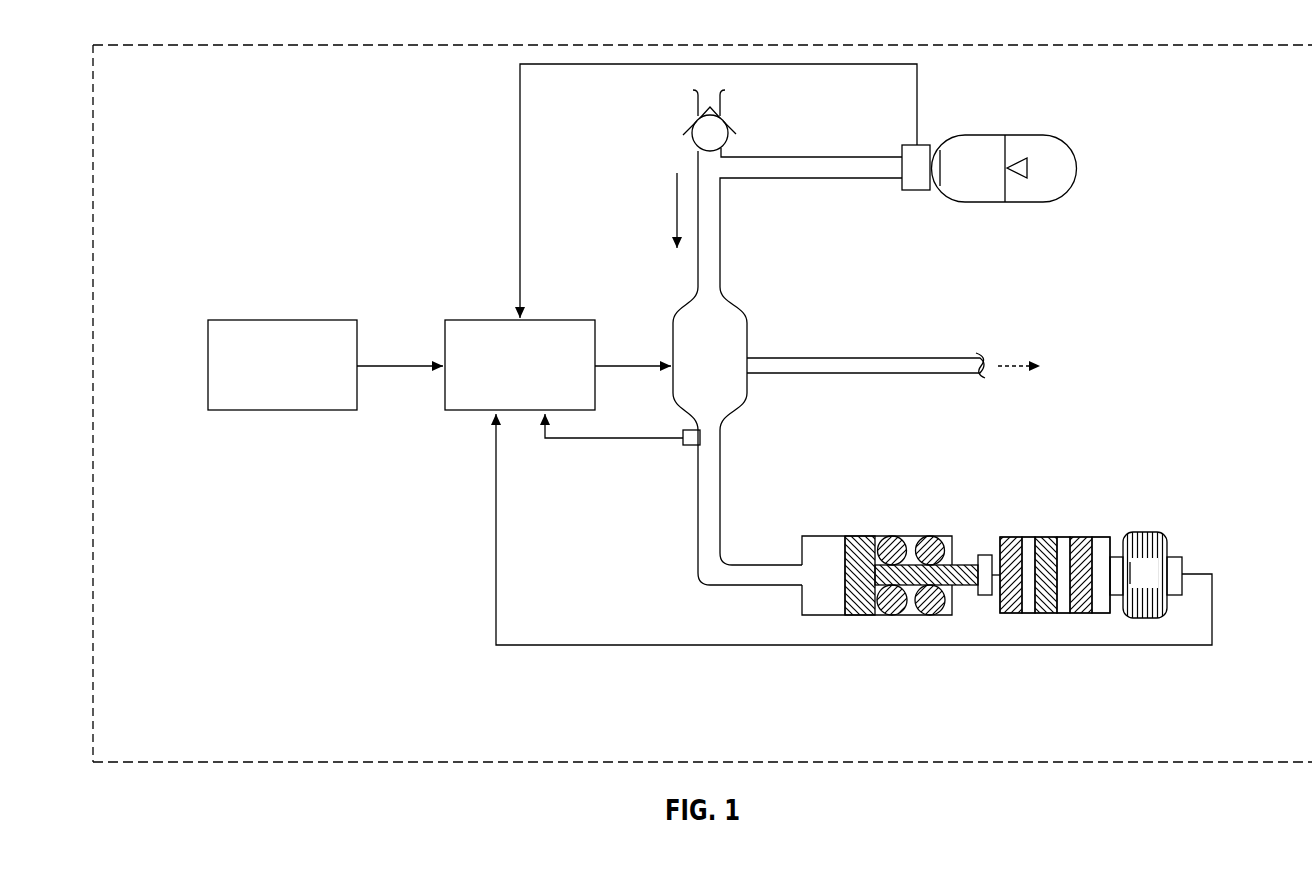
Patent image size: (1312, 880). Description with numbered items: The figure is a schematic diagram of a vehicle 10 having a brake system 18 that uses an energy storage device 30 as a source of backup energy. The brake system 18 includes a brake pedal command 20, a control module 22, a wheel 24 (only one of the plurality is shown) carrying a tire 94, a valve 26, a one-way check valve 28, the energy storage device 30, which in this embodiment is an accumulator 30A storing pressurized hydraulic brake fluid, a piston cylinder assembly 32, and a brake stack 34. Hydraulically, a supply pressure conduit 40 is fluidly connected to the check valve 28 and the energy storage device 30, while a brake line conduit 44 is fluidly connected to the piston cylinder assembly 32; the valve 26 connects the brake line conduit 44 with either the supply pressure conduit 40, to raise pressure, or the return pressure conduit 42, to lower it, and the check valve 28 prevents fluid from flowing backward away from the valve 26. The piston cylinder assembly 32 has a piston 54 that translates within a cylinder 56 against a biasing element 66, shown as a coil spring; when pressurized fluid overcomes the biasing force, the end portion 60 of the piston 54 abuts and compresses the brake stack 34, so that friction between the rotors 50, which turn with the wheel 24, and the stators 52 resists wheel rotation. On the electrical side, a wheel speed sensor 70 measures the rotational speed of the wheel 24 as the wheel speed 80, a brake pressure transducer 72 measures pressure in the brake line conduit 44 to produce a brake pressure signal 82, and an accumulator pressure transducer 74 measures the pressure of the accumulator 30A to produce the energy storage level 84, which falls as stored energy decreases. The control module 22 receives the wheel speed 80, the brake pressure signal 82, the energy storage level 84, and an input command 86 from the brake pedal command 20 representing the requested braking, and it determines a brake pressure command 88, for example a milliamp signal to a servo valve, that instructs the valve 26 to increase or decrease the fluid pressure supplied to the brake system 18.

The vehicle 10 is at (160, 44).
The brake system 18 is at (246, 99).
The brake pedal command 20 is at (262, 320).
The control module 22 is at (500, 320).
The wheel 24 is at (1148, 530).
The valve 26 is at (737, 350).
The check valve 28 is at (740, 117).
The energy storage device 30 is at (1049, 124).
The accumulator 30A is at (1000, 183).
The piston cylinder assembly 32 is at (893, 524).
The brake stack 34 is at (1068, 469).
The supply pressure conduit 40 is at (723, 222).
The return pressure conduit 42 is at (888, 358).
The brake line conduit 44 is at (722, 447).
The rotor 50 is at (1010, 540).
The stator 52 is at (1028, 605).
The piston 54 is at (862, 598).
The cylinder 56 is at (820, 600).
The end portion 60 is at (967, 562).
The biasing element 66 is at (935, 605).
The wheel speed sensor 70 is at (1185, 566).
The brake pressure transducer 72 is at (690, 448).
The accumulator pressure transducer 74 is at (922, 160).
The wheel speed 80 is at (565, 647).
The brake pressure signal 82 is at (620, 440).
The energy storage level 84 is at (520, 226).
The input command 86 is at (402, 358).
The brake pressure command 88 is at (632, 358).
The tire 94 is at (1156, 586).